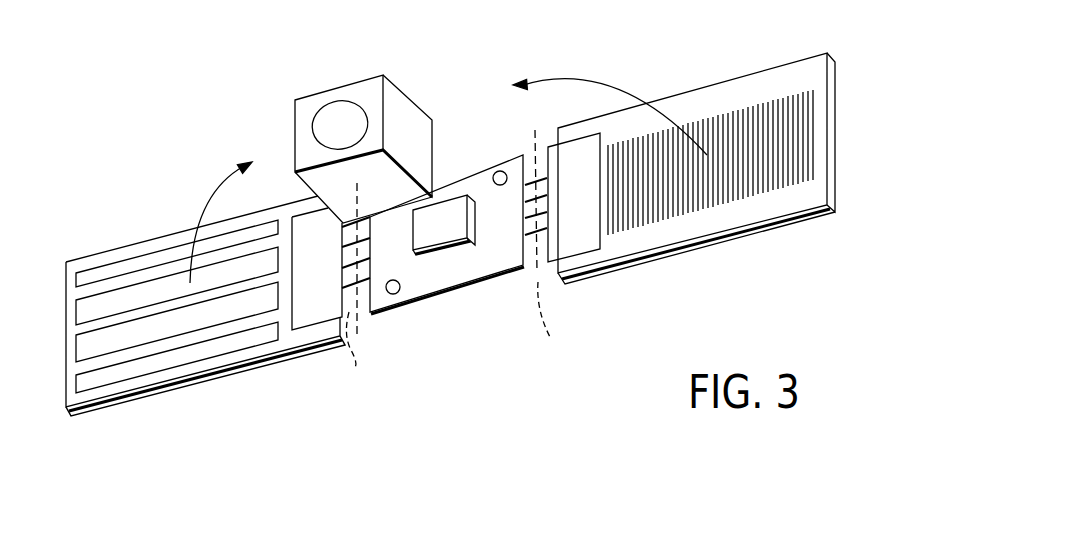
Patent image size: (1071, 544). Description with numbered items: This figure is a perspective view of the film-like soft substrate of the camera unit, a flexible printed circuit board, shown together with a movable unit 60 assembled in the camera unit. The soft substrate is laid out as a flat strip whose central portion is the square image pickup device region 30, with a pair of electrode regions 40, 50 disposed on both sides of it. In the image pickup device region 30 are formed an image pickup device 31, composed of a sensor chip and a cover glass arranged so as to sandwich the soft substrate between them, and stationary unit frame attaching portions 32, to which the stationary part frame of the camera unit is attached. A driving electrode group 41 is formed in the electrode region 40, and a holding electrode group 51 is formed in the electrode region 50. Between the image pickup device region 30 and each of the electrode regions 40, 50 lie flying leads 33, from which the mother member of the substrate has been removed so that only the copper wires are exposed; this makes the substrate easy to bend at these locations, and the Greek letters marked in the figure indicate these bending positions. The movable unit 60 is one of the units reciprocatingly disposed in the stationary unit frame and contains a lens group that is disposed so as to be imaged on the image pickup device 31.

The image pickup device region 30 is at (492, 267).
The image pickup device 31 is at (431, 237).
The stationary unit frame attaching portions 32 is at (496, 170).
The flying leads 33 is at (545, 178).
The electrode region 40 is at (708, 223).
The driving electrode group 41 is at (750, 117).
The electrode region 50 is at (131, 387).
The holding electrode group 51 is at (121, 300).
The movable unit 60 is at (408, 115).